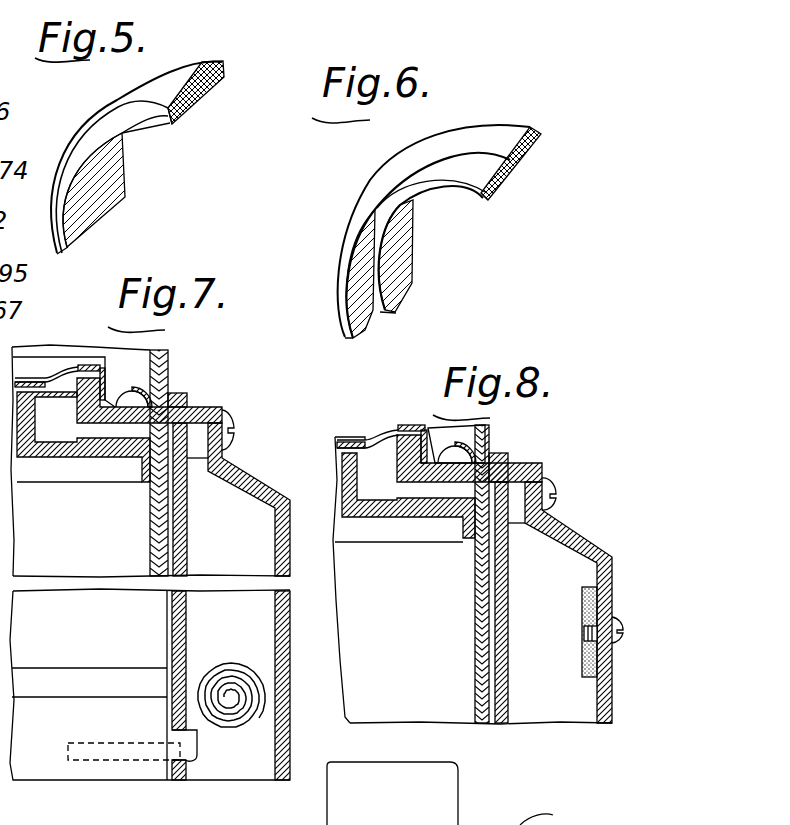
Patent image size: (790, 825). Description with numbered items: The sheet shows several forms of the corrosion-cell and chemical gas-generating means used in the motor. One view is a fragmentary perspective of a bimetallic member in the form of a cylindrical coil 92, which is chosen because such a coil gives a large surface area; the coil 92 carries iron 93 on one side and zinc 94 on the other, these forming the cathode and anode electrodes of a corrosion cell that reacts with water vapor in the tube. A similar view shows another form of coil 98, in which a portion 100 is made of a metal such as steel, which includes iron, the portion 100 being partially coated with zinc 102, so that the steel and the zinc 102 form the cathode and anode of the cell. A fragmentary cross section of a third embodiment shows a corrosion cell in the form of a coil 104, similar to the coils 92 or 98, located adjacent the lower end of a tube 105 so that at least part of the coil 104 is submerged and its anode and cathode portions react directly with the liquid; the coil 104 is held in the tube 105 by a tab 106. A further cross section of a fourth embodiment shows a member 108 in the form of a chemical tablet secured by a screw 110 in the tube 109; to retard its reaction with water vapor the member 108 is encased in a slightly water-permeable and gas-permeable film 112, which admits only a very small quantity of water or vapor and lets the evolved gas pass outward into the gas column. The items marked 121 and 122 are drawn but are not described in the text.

In FIG. 5, the coil 92 is at (100, 182).
In FIG. 5, the iron 93 is at (202, 62).
In FIG. 5, the zinc 94 is at (190, 104).
In FIG. 6, the coil 98 is at (397, 278).
In FIG. 6, the portion 100 is at (490, 200).
In FIG. 6, the zinc 102 is at (528, 165).
In FIG. 7, the coil 104 is at (250, 664).
In FIG. 7, the tube 105 is at (281, 734).
In FIG. 7, the tab 106 is at (197, 760).
In FIG. 8, the member 108 is at (583, 600).
In FIG. 8, the tube 109 is at (600, 697).
In FIG. 8, the screw 110 is at (613, 620).
In FIG. 8, the film 112 is at (583, 650).
In FIG. 8, the base plate 121 is at (560, 812).
In FIG. 8, the cover block 122 is at (440, 793).